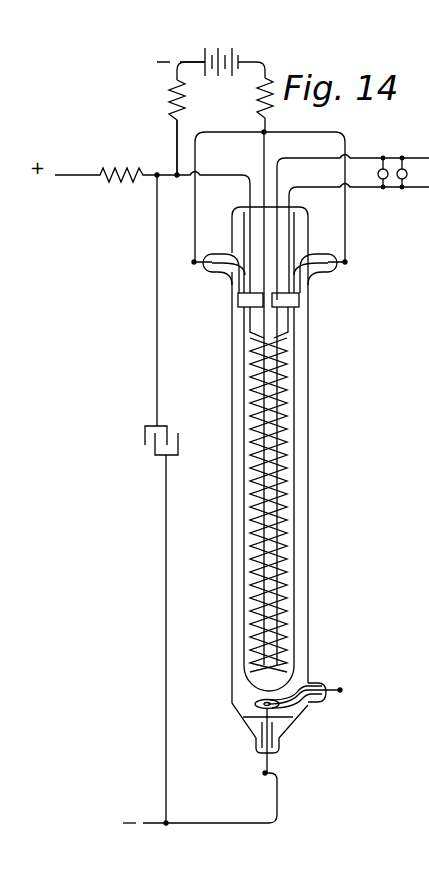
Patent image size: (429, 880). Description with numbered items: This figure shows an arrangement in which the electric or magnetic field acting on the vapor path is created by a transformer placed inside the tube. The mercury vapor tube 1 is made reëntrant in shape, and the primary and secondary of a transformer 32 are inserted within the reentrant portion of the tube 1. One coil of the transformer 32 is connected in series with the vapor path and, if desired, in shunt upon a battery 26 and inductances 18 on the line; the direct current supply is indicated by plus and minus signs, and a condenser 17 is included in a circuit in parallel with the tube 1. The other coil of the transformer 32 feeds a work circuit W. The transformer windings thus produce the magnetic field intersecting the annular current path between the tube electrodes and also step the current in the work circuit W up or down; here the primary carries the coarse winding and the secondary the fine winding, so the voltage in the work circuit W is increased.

The mercury vapor tube 1 is at (308, 445).
The condenser 17 is at (143, 499).
The inductances 18 is at (169, 100).
The battery 26 is at (243, 60).
The transformer 32 is at (278, 410).
The work circuit W is at (392, 164).